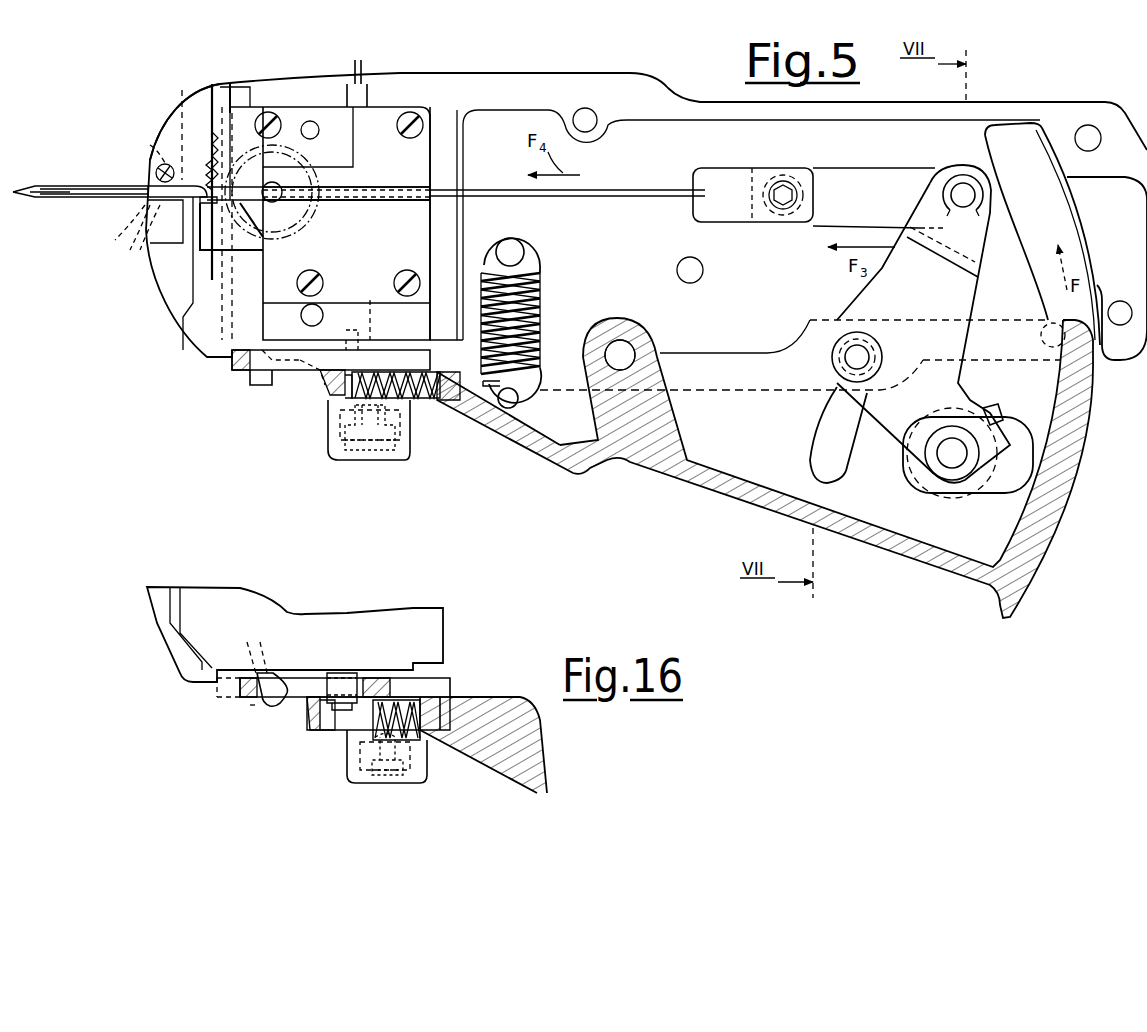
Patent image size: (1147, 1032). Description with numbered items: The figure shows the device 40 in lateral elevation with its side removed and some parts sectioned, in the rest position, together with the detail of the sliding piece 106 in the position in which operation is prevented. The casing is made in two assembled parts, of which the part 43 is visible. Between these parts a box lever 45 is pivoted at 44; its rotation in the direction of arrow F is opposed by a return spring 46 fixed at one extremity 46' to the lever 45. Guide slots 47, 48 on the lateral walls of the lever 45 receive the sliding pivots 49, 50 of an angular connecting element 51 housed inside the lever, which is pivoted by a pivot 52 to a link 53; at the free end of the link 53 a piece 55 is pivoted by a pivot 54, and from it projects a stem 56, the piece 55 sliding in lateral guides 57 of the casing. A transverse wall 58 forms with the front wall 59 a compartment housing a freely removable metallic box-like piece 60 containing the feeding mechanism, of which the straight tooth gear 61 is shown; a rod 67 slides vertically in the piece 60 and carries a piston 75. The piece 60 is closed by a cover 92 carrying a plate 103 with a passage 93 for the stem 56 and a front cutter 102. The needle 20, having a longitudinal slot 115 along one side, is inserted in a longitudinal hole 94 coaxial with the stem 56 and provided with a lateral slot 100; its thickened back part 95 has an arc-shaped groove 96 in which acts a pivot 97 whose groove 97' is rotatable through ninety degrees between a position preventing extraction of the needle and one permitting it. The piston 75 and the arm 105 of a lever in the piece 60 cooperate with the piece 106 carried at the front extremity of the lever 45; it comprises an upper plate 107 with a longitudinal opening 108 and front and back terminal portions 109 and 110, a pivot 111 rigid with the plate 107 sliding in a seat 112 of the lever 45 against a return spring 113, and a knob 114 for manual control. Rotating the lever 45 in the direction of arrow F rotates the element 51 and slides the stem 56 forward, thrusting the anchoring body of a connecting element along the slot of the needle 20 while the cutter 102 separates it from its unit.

In FIG. 5, the needle 20 is at (30, 186).
In FIG. 5, the longitudinal slot 115 is at (62, 194).
In FIG. 5, the front wall 59 is at (160, 118).
In FIG. 5, the pivot 97 is at (133, 163).
In FIG. 5, the groove 97' is at (138, 140).
In FIG. 5, the straight tooth gear 61 is at (213, 180).
In FIG. 5, the groove 96 is at (147, 210).
In FIG. 5, the longitudinal hole 94 is at (125, 245).
In FIG. 5, the thickened part 95 is at (152, 232).
In FIG. 5, the lateral slot 100 is at (160, 212).
In FIG. 5, the cutter 102 is at (245, 215).
In FIG. 5, the passage 93 is at (338, 201).
In FIG. 5, the stem 56 is at (432, 204).
In FIG. 5, the lateral guides 57 is at (605, 186).
In FIG. 5, the cover 92 is at (372, 298).
In FIG. 5, the piston 75 is at (350, 328).
In FIG. 16, the piston 75 is at (335, 680).
In FIG. 5, the rod 67 is at (352, 66).
In FIG. 5, the box-like piece 60 is at (374, 120).
In FIG. 5, the plate 103 is at (420, 152).
In FIG. 5, the transverse wall 58 is at (455, 162).
In FIG. 5, the device 40 is at (578, 68).
In FIG. 5, the casing part 43 is at (1045, 112).
In FIG. 5, the pivot 44 is at (624, 350).
In FIG. 5, the box lever 45 is at (885, 540).
In FIG. 16, the box lever 45 is at (522, 795).
In FIG. 5, the return spring 46 is at (535, 317).
In FIG. 5, the spring extremity 46' is at (532, 401).
In FIG. 5, the piece 55 is at (740, 175).
In FIG. 5, the pivot 54 is at (788, 180).
In FIG. 5, the link 53 is at (855, 190).
In FIG. 5, the pivot 52 is at (963, 183).
In FIG. 5, the angular connecting element 51 is at (870, 312).
In FIG. 5, the pivot 50 is at (845, 362).
In FIG. 5, the guide slot 48 is at (845, 470).
In FIG. 5, the pivot 49 is at (952, 468).
In FIG. 5, the guide slot 47 is at (1000, 470).
In FIG. 5, the back terminal portion 110 is at (428, 365).
In FIG. 16, the back terminal portion 110 is at (440, 688).
In FIG. 5, the front terminal portion 109 is at (242, 361).
In FIG. 16, the front terminal portion 109 is at (238, 698).
In FIG. 5, the arm 105 is at (260, 383).
In FIG. 16, the arm 105 is at (278, 705).
In FIG. 5, the upper plate 107 is at (240, 378).
In FIG. 16, the upper plate 107 is at (252, 712).
In FIG. 5, the longitudinal opening 108 is at (322, 376).
In FIG. 16, the longitudinal opening 108 is at (372, 680).
In FIG. 5, the pivot 111 is at (342, 395).
In FIG. 16, the pivot 111 is at (330, 742).
In FIG. 5, the seat 112 is at (440, 404).
In FIG. 16, the seat 112 is at (360, 716).
In FIG. 5, the return spring 113 is at (418, 400).
In FIG. 16, the return spring 113 is at (425, 745).
In FIG. 5, the piece 106 is at (326, 430).
In FIG. 16, the piece 106 is at (345, 775).
In FIG. 5, the knob 114 is at (340, 452).
In FIG. 16, the knob 114 is at (362, 782).